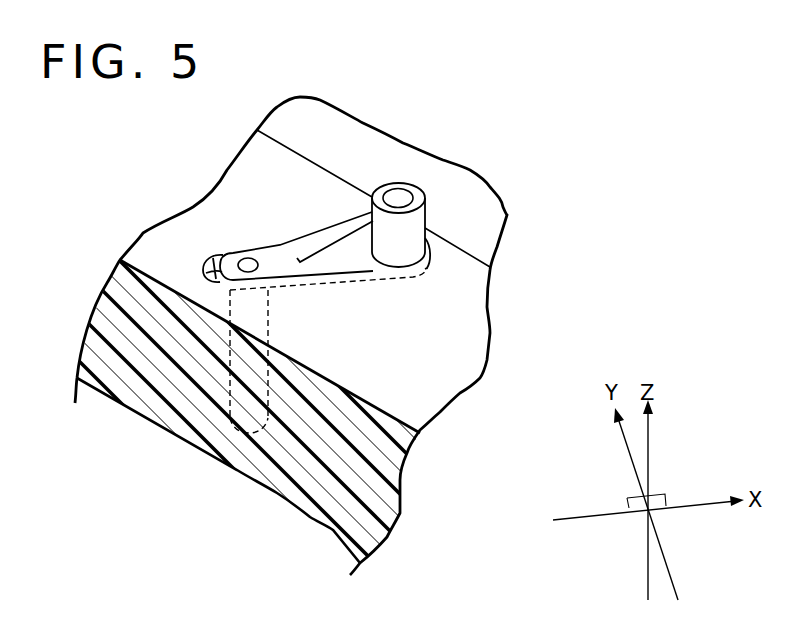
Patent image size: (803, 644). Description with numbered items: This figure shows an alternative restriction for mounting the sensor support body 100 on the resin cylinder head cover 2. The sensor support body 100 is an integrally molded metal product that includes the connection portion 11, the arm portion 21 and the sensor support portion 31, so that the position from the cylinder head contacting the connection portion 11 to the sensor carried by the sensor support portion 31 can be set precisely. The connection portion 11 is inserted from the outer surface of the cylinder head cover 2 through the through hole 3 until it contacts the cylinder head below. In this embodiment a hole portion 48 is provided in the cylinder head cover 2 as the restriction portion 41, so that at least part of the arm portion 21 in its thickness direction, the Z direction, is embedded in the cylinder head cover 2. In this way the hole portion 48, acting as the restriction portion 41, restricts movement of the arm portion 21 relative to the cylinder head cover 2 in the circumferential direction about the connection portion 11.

The cylinder head cover 2 is at (468, 330).
The through hole 3 is at (251, 307).
The connection portion 11 is at (267, 333).
The arm portion 21 is at (273, 256).
The sensor support portion 31 is at (429, 220).
The restriction portion 41 is at (212, 258).
The hole portion 48 is at (157, 225).
The sensor support body 100 is at (431, 176).